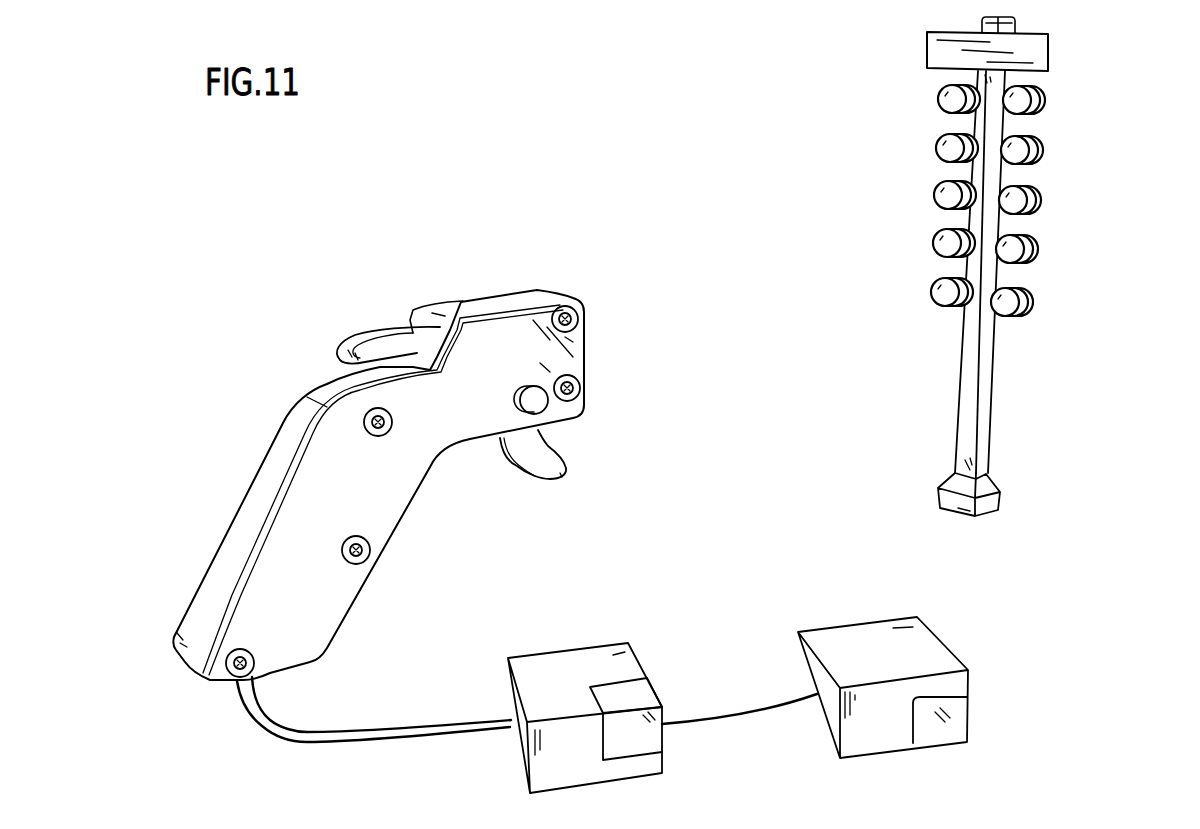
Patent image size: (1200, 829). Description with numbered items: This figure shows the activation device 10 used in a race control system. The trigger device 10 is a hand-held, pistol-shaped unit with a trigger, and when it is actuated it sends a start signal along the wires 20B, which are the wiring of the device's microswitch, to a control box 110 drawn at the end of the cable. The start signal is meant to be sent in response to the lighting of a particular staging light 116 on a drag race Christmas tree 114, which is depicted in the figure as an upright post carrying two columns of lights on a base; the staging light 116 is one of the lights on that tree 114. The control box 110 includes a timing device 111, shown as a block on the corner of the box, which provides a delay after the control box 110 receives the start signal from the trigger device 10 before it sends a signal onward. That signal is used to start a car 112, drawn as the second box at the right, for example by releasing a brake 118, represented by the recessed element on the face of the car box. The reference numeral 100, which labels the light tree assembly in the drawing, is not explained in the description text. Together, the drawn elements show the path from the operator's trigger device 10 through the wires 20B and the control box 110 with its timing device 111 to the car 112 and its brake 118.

The activation device 10 is at (315, 375).
The wiring 20B is at (258, 733).
The light tree 100 is at (906, 167).
The control box 110 is at (568, 665).
The timing device 111 is at (643, 695).
The car 112 is at (927, 653).
The drag race Christmas tree 114 is at (1032, 202).
The staging light 116 is at (1030, 253).
The brake 118 is at (945, 726).